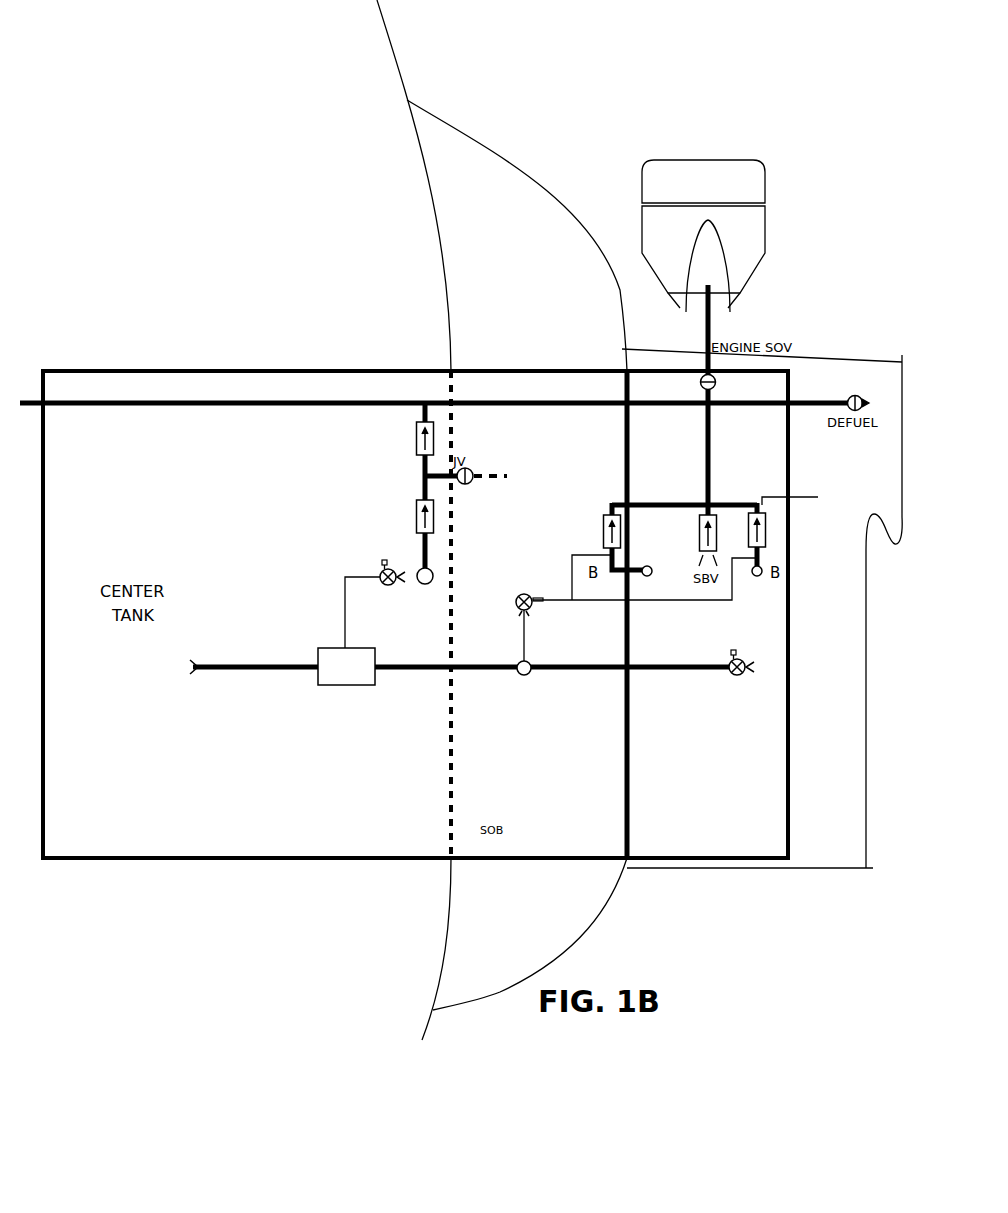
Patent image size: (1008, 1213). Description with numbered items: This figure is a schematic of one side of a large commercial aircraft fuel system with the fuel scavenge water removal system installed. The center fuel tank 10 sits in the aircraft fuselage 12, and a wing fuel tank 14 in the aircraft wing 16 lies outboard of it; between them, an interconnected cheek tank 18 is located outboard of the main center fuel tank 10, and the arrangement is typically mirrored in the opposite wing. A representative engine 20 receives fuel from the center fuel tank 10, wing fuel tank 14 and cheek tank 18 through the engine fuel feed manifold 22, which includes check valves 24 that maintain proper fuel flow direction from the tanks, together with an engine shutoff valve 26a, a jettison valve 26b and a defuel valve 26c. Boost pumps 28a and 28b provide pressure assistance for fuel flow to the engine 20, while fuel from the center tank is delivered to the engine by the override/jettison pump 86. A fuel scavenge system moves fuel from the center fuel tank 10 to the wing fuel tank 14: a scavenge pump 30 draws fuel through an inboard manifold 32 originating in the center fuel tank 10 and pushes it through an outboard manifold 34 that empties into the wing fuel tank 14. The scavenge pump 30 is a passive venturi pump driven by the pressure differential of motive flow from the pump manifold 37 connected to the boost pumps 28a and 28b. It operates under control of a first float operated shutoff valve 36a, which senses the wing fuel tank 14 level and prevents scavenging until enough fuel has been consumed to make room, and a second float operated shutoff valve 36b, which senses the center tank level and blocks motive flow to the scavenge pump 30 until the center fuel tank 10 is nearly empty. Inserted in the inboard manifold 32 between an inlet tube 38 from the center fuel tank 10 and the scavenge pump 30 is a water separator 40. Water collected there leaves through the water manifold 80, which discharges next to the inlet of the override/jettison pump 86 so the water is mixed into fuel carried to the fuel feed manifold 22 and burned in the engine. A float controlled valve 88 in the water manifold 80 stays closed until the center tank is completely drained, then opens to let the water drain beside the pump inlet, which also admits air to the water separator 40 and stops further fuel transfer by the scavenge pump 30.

The center fuel tank 10 is at (135, 445).
The aircraft fuselage 12 is at (390, 58).
The wing fuel tank 14 is at (757, 468).
The aircraft wing 16 is at (730, 868).
The cheek tank 18 is at (543, 823).
The engine 20 is at (688, 160).
The engine fuel feed manifold 22 is at (673, 504).
The check valve 24 is at (416, 437).
The engine shutoff valve 26a is at (715, 382).
The jettison valve 26b is at (470, 468).
The defuel valve 26c is at (850, 395).
The boost pump 28a is at (650, 576).
The boost pump 28b is at (760, 578).
The scavenge pump 30 is at (527, 660).
The inboard manifold 32 is at (416, 670).
The outboard manifold 34 is at (566, 670).
The first float operated shutoff valve 36a is at (745, 656).
The second float operated shutoff valve 36b is at (525, 596).
The pump manifold 37 is at (653, 600).
The inlet tube 38 is at (256, 670).
The water separator 40 is at (350, 686).
The water manifold 80 is at (340, 612).
The override/jettison (OJ) pump 86 is at (432, 580).
The float controlled valve 88 is at (382, 573).